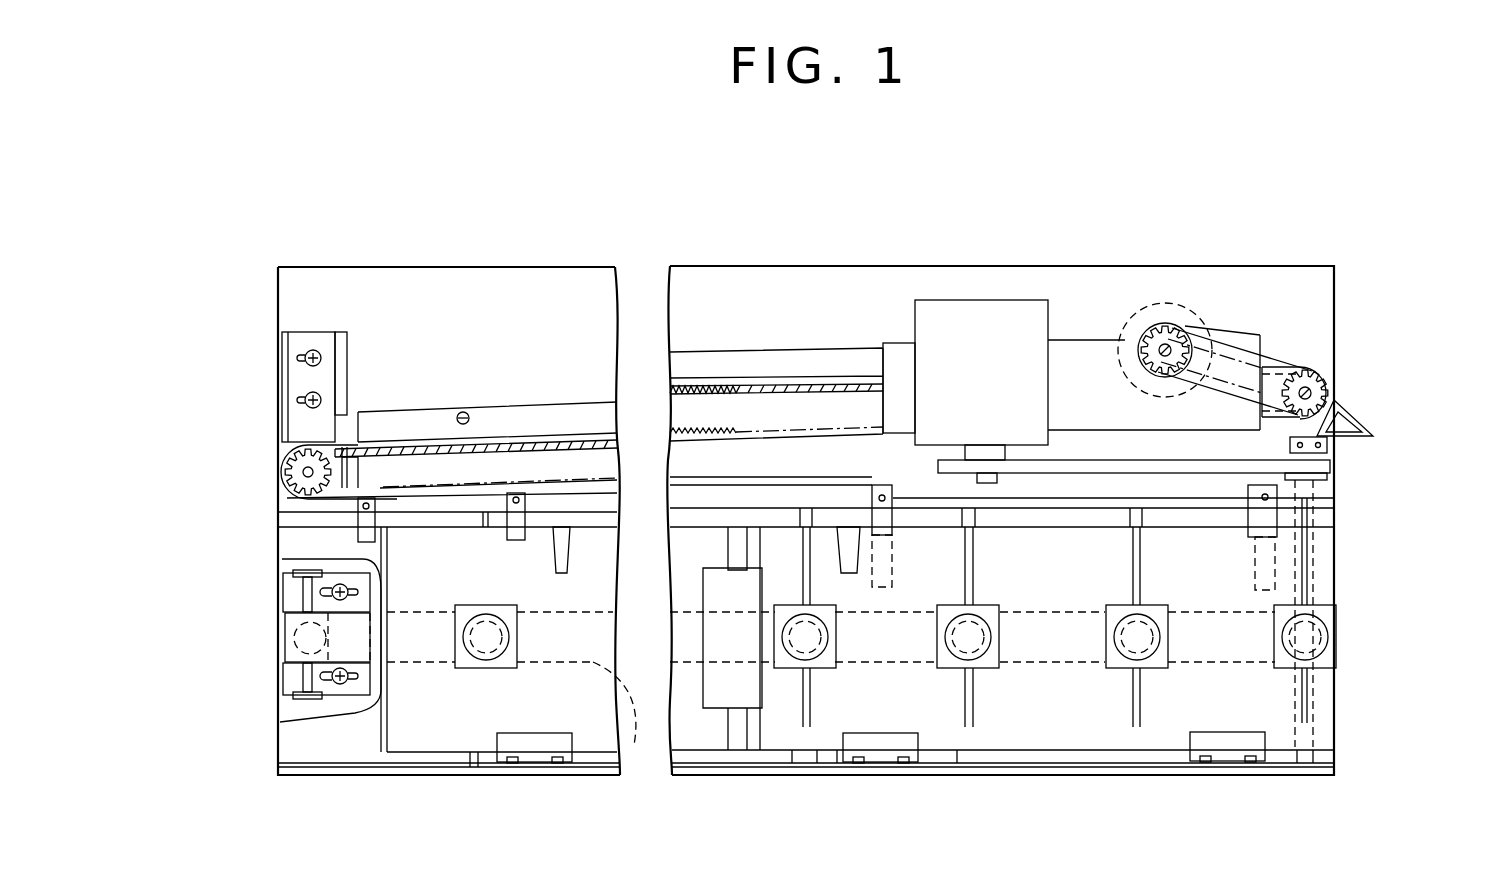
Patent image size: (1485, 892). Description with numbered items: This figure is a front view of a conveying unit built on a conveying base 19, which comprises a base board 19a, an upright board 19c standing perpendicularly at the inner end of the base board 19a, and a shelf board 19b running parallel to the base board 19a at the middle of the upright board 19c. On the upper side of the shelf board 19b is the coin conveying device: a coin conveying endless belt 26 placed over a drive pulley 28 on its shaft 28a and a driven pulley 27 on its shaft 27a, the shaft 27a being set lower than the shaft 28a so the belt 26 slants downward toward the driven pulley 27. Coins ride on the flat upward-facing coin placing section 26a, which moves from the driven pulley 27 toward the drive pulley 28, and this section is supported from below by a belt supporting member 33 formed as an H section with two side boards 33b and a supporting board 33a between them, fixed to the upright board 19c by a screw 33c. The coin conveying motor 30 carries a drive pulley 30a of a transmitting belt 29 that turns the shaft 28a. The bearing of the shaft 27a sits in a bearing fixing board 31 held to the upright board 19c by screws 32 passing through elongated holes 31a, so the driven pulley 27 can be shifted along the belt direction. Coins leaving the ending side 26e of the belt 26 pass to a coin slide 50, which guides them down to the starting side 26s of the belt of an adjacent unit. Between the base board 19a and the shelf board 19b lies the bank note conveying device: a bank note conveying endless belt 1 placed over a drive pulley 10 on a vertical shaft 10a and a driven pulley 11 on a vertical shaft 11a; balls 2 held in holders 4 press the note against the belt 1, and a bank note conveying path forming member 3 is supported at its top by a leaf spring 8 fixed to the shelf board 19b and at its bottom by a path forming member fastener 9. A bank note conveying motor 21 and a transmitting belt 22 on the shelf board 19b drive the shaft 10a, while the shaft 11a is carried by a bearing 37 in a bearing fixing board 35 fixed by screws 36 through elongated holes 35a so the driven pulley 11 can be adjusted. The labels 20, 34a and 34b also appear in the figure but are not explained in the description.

The bank note conveying endless belt 1 is at (1085, 665).
The balls 2 is at (475, 650).
The bank note conveying path forming member 3 is at (1022, 742).
The holders 4 is at (503, 670).
The leaf spring 8 is at (516, 540).
The path forming member fastener 9 is at (537, 750).
The drive pulley 10 is at (1335, 664).
The shaft of the drive pulley 10a is at (1305, 516).
The driven pulley 11 is at (290, 643).
The shaft of the driven pulley 11a is at (300, 682).
The conveying base 19 is at (512, 266).
The base board 19a is at (431, 776).
The shelf board 19b is at (297, 515).
The upright board 19c is at (305, 292).
The mounting plate 20 is at (1335, 460).
The bank note conveying motor 21 is at (995, 305).
The transmitting belt 22 is at (1108, 460).
The coin conveying endless belt 26 is at (535, 406).
The coin placing section 26a is at (848, 387).
The ending side 26e is at (1336, 386).
The starting side 26s is at (297, 446).
The driven pulley 27 is at (292, 456).
The shaft of the driven pulley 27a is at (283, 472).
The drive pulley 28 is at (1322, 382).
The shaft of the drive pulley 28a is at (1309, 392).
The transmitting belt 29 is at (1238, 345).
The coin conveying motor 30 is at (1152, 303).
The drive pulley of the transmitting belt 30a is at (1170, 340).
The bearing fixing board 31 is at (296, 378).
The elongated holes 31a is at (303, 356).
The screws 32 is at (313, 350).
The belt supporting member 33 is at (410, 412).
The supporting board 33a is at (730, 390).
The side boards 33b is at (760, 363).
The screw 33c is at (482, 412).
The toothed rack 34a is at (433, 452).
The toothed rack cover 34b is at (488, 408).
The bearing fixing board 35 is at (338, 690).
The elongated holes 35a is at (330, 600).
The screws 36 is at (303, 587).
The bearing 37 is at (305, 697).
The coin slide 50 is at (1373, 422).